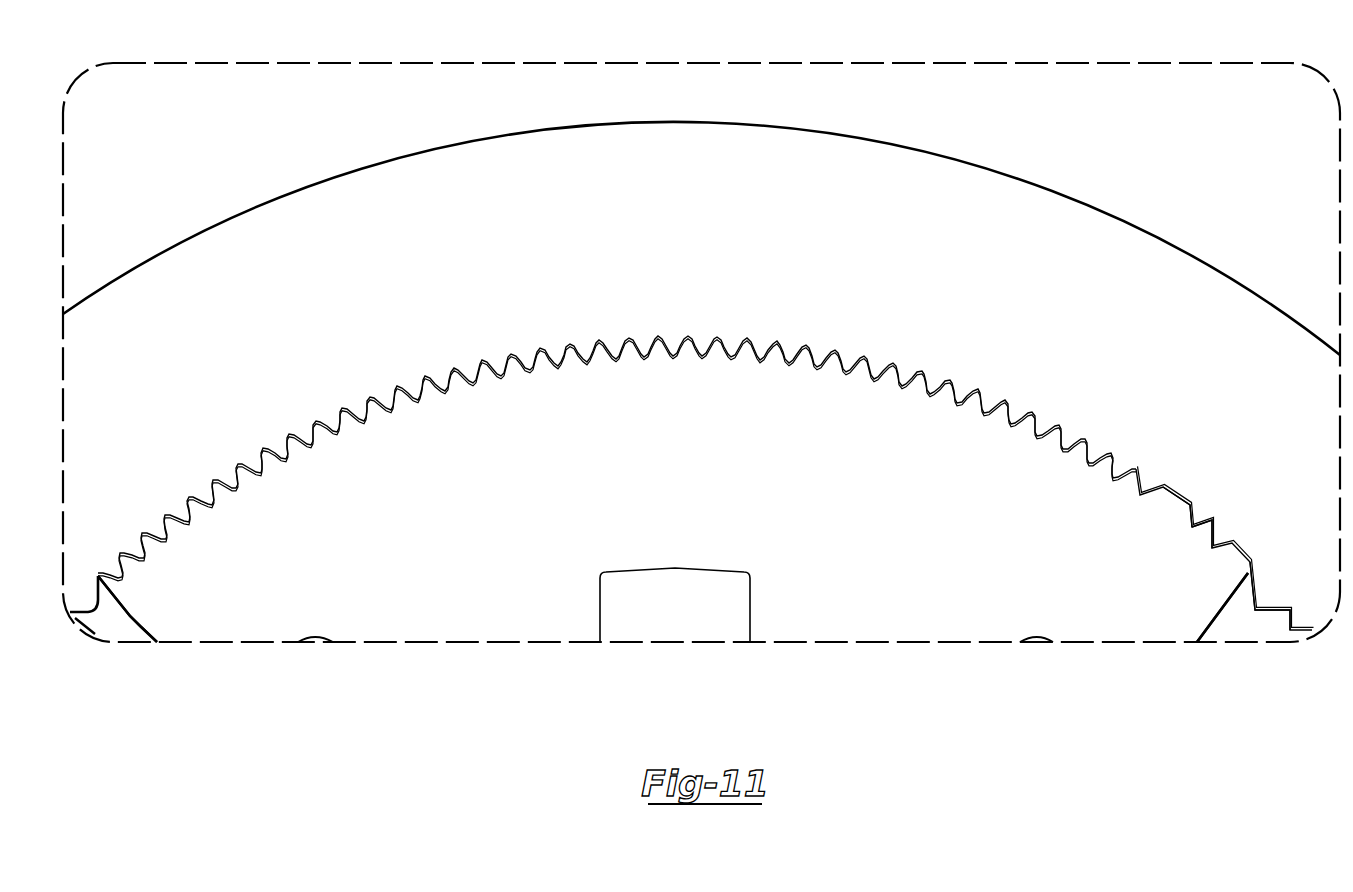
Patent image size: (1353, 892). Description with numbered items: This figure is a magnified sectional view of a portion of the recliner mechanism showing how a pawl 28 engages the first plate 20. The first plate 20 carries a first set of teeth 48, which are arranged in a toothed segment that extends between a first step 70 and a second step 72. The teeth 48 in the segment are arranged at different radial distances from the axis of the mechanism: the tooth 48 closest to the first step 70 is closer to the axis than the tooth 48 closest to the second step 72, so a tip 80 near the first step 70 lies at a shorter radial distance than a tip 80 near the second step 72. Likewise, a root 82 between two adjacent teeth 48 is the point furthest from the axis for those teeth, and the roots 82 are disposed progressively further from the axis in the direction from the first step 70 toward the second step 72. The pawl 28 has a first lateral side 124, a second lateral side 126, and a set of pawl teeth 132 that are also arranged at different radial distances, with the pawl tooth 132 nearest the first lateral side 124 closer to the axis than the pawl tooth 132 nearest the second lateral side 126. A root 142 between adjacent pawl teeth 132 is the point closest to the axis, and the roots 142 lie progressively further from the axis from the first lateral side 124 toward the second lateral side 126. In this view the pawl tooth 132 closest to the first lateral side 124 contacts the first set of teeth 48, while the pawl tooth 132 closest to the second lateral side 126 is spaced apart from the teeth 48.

The first plate 20 is at (310, 190).
The pawl 28 is at (660, 519).
The first set of teeth 48 is at (703, 340).
The pawl teeth 132 is at (835, 358).
The root 82 is at (1207, 520).
The tip 80 is at (1192, 528).
The root 142 is at (1212, 550).
The second lateral side 126 is at (1217, 630).
The second step 72 is at (1253, 597).
The first step 70 is at (108, 607).
The first lateral side 124 is at (136, 625).